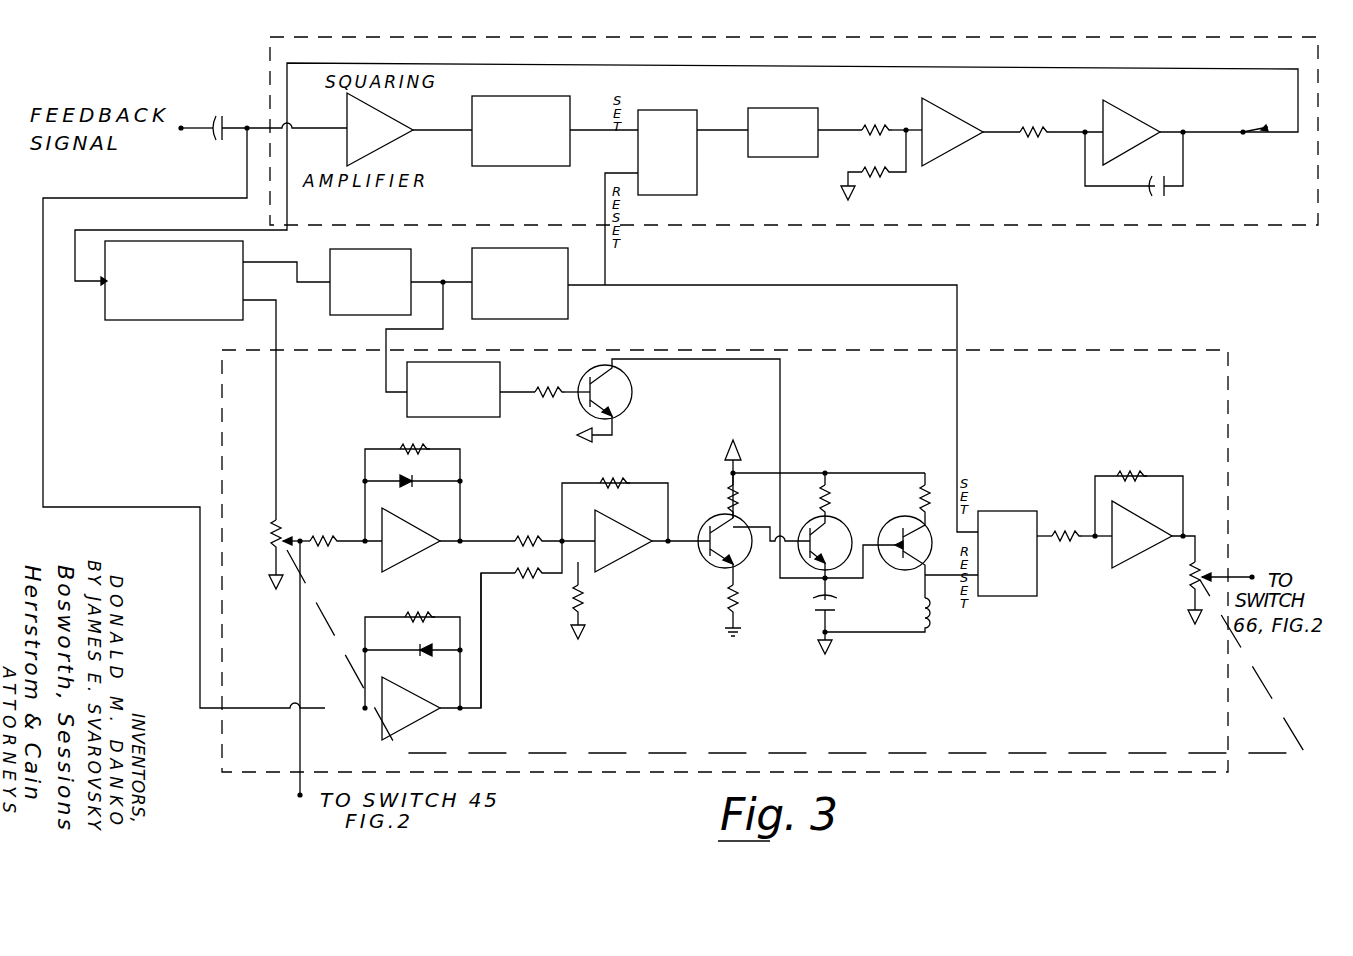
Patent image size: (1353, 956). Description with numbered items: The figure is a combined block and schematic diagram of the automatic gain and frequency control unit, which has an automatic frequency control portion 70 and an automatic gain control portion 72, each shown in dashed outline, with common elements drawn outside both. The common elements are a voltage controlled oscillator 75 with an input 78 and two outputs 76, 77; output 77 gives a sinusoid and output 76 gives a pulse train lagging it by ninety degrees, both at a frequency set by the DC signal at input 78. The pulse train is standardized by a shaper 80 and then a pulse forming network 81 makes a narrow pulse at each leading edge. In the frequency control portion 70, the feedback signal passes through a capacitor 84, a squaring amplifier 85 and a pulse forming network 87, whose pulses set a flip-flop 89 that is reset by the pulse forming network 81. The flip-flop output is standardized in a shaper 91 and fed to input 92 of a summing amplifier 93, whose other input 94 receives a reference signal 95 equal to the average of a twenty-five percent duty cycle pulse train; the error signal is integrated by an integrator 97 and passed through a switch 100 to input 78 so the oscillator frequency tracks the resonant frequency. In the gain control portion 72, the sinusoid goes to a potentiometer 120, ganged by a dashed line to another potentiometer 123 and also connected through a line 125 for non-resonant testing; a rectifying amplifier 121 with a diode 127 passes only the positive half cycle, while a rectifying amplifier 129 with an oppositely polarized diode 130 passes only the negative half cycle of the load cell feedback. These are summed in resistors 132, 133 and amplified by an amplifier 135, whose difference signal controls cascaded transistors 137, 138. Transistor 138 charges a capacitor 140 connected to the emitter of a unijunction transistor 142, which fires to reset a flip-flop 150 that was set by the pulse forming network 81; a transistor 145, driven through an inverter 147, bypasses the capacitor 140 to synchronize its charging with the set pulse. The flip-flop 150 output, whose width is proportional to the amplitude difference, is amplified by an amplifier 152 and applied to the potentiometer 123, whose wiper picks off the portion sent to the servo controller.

The automatic frequency control portion 70 is at (348, 37).
The automatic gain control portion 72 is at (215, 378).
The voltage controlled oscillator 75 is at (176, 320).
The output 76 is at (268, 262).
The output 77 is at (284, 308).
The input 78 is at (76, 283).
The shaper 80 is at (366, 250).
The pulse forming network 81 is at (533, 248).
The capacitor 84 is at (216, 144).
The squaring amplifier 85 is at (400, 124).
The pulse forming network 87 is at (514, 97).
The flip-flop 89 is at (677, 110).
The shaper 91 is at (776, 108).
The input 92 is at (866, 124).
The summing amplifier 93 is at (944, 107).
The input 94 is at (848, 172).
The reference signal 95 is at (858, 193).
The integrator 97 is at (1133, 118).
The switch 100 is at (1248, 128).
The potentiometer 120 is at (282, 530).
The rectifying amplifier 121 is at (462, 500).
The potentiometer 123 is at (1190, 578).
The line 125 is at (300, 646).
The diode 127 is at (396, 480).
The rectifying amplifier 129 is at (430, 713).
The diode 130 is at (410, 648).
The resistor 132 is at (525, 534).
The resistor 133 is at (525, 578).
The amplifier 135 is at (614, 566).
The transistor 137 is at (715, 522).
The transistor 138 is at (835, 528).
The capacitor 140 is at (812, 608).
The unijunction transistor 142 is at (905, 580).
The transistor 145 is at (630, 398).
The inverter 147 is at (500, 418).
The flip-flop 150 is at (1036, 585).
The amplifier 152 is at (1108, 554).